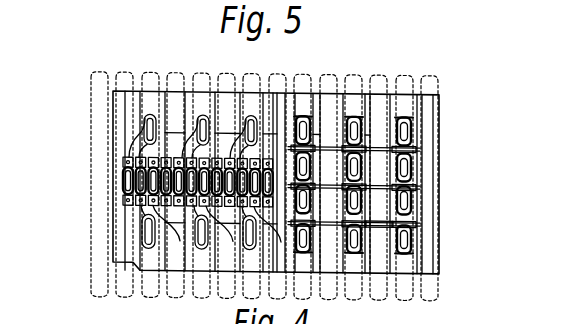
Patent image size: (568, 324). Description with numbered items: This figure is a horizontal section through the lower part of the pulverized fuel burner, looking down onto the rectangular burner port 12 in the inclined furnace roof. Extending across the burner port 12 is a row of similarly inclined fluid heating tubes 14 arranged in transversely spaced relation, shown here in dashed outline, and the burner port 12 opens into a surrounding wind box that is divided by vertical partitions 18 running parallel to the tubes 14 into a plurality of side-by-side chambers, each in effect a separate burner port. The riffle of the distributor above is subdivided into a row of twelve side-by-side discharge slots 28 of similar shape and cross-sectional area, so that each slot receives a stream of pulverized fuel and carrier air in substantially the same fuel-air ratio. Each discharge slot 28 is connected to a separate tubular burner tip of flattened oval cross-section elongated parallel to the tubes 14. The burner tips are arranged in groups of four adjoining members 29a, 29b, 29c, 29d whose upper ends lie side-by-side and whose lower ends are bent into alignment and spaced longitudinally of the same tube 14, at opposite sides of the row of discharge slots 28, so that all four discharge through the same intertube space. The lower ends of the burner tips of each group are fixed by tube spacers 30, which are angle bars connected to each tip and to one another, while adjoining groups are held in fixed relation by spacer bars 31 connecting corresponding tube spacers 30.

The burner port 12 is at (327, 112).
The fluid heating tubes 14 is at (406, 70).
The vertical partitions 18 is at (282, 108).
The discharge slots 28 is at (143, 175).
The burner tip 29a is at (503, 110).
The burner tip 29b is at (503, 142).
The burner tip 29c is at (503, 214).
The burner tip 29d is at (503, 255).
The tube spacers 30 is at (411, 185).
The spacer bars 31 is at (374, 232).